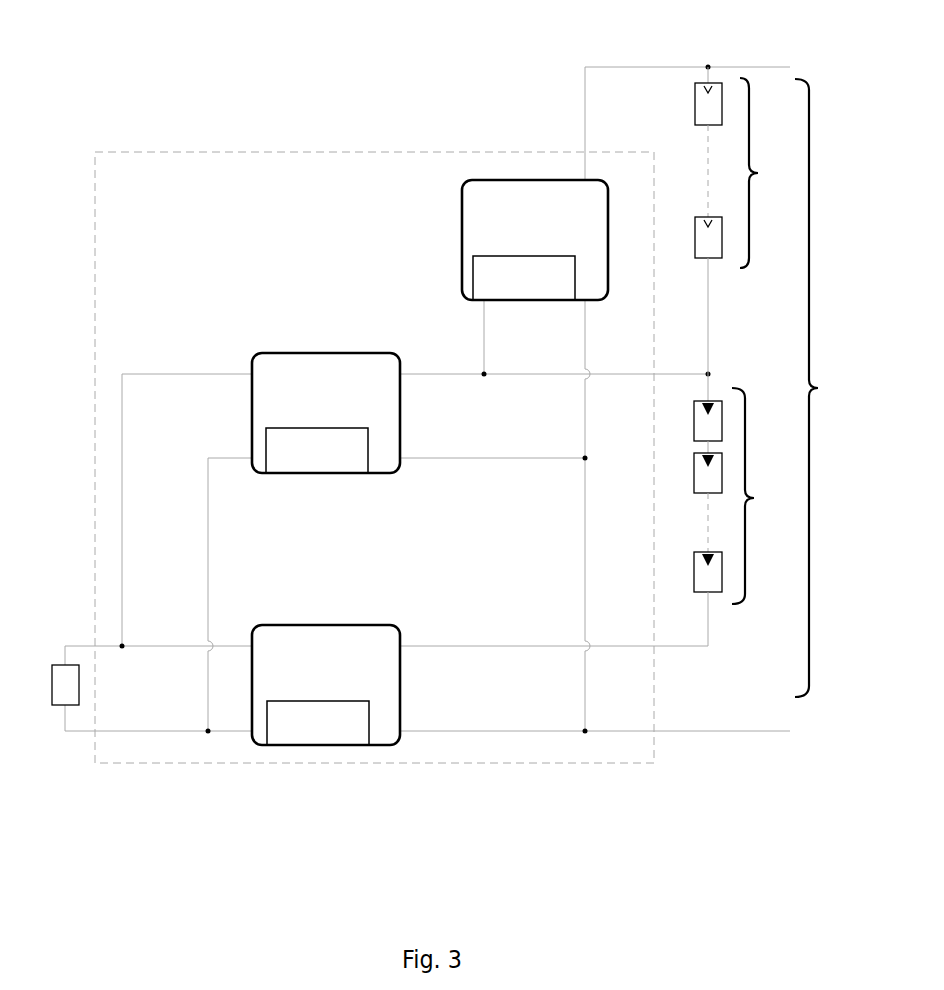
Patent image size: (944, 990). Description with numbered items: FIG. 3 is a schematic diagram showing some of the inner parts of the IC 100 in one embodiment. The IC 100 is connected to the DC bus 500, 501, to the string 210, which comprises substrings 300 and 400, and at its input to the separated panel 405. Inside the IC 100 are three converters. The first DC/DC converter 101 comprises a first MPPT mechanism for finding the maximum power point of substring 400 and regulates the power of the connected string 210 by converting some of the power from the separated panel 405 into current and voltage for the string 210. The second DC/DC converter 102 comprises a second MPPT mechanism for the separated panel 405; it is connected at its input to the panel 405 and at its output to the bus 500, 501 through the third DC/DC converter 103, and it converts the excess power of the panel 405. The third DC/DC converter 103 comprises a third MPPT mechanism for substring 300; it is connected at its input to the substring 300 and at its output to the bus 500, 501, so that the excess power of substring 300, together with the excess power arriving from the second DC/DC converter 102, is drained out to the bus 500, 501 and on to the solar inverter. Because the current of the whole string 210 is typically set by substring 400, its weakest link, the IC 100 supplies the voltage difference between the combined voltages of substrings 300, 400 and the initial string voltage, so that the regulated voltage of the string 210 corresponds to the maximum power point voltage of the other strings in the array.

The IC 100 is at (154, 151).
The first DC/DC converter 101 is at (253, 625).
The second DC/DC converter 102 is at (256, 353).
The third DC/DC converter 103 is at (457, 267).
The string 210 is at (779, 382).
The substring 300 is at (748, 517).
The substring 400 is at (749, 234).
The separated panel 405 is at (66, 675).
The DC bus 500 is at (585, 67).
The DC bus 501 is at (674, 733).